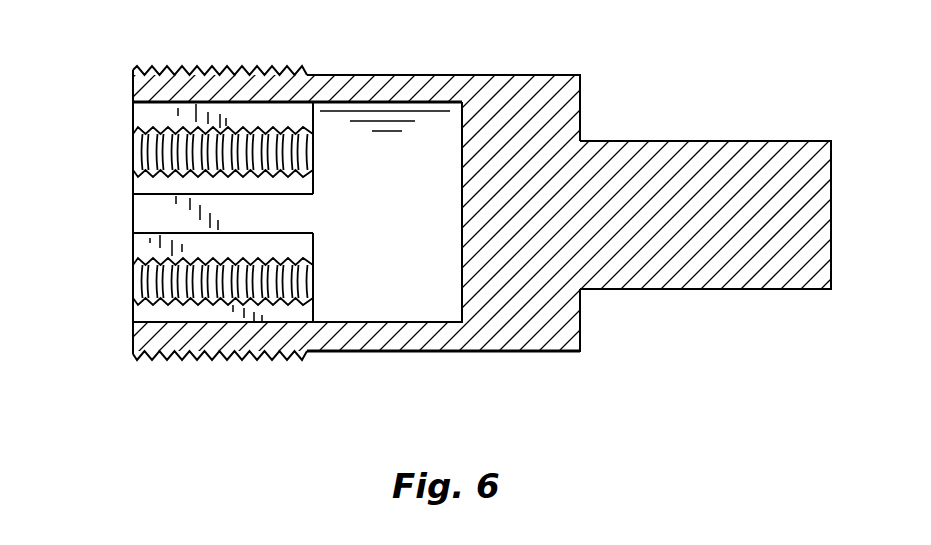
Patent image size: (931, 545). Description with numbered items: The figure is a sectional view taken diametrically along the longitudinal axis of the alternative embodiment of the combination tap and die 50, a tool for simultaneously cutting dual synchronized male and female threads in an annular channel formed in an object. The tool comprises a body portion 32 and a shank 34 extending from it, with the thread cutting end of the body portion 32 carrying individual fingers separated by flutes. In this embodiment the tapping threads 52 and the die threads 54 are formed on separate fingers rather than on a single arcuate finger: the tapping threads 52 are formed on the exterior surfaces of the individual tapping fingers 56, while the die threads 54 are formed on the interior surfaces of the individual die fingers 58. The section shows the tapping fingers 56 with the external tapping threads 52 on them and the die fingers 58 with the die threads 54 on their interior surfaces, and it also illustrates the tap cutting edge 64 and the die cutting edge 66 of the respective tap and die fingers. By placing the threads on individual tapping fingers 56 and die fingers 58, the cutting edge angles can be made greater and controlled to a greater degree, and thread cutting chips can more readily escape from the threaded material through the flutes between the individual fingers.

The combination tap and die 50 is at (617, 385).
The body portion 32 is at (515, 103).
The shank 34 is at (692, 153).
The tapping threads 52 is at (232, 72).
The die threads 54 is at (130, 152).
The tapping fingers 56 is at (132, 88).
The die fingers 58 is at (130, 137).
The tap cutting edge 64 is at (143, 245).
The die cutting edge 66 is at (140, 317).